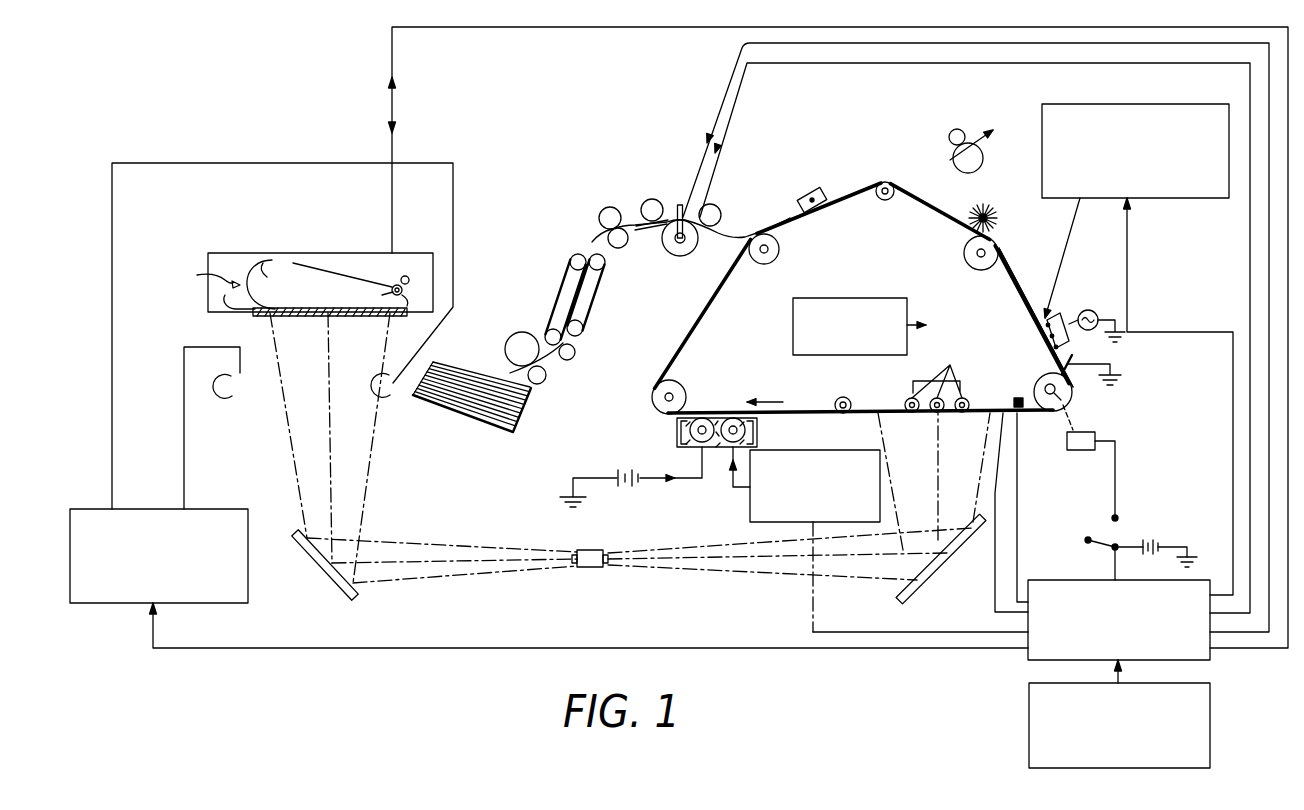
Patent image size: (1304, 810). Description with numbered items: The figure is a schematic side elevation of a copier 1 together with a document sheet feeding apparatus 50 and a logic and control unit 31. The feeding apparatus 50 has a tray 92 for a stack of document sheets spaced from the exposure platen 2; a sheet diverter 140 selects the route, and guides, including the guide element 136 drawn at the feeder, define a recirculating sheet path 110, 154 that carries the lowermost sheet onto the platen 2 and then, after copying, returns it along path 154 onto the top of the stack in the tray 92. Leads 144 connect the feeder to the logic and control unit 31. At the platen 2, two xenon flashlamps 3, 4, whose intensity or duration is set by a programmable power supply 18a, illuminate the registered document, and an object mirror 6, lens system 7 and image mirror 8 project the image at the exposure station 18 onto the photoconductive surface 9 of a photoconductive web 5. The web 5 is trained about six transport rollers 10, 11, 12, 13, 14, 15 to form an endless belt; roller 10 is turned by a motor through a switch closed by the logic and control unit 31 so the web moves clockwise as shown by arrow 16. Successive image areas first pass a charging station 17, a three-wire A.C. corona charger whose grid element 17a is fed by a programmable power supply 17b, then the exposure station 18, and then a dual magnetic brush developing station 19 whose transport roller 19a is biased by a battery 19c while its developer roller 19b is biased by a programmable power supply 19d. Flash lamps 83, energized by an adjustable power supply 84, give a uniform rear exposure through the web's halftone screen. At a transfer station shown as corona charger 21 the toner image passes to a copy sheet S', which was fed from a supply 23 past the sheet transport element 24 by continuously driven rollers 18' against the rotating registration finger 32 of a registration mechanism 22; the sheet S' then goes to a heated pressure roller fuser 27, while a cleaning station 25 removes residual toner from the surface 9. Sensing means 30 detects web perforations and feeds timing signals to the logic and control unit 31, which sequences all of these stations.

The copier 1 is at (553, 230).
The exposure platen 2 is at (350, 316).
The xenon flashlamp 3 is at (236, 395).
The xenon flashlamp 4 is at (398, 394).
The photoconductive web 5 is at (822, 225).
The object mirror 6 is at (315, 572).
The lens system 7 is at (590, 550).
The image mirror 8 is at (940, 558).
The photoconductive surface 9 is at (1020, 283).
The transport roller 10 is at (1042, 378).
The transport roller 11 is at (851, 397).
The transport roller 12 is at (695, 380).
The transport roller 13 is at (764, 264).
The transport roller 14 is at (885, 201).
The transport roller 15 is at (972, 265).
The arrow 16 is at (782, 402).
The charging station 17 is at (1050, 318).
The charger grid 17a is at (1040, 340).
The programmable power supply 17b is at (1135, 167).
The exposure station 18 is at (864, 317).
The continuously driven rollers 18' is at (660, 202).
The programmable power supply 18a is at (213, 603).
The dual magnetic brush developing station 19 is at (677, 441).
The transport roller 19a is at (714, 418).
The developer roller 19b is at (757, 437).
The battery 19c is at (618, 466).
The programmable power supply 19d is at (750, 512).
The transfer station corona charger 21 is at (798, 204).
The copy sheet registration mechanism 22 is at (673, 252).
The copy sheet supply 23 is at (473, 380).
The sheet transport rollers 24 is at (587, 335).
The cleaning station 25 is at (997, 215).
The heated pressure roller fuser 27 is at (970, 135).
The perforation sensing means 30 is at (1017, 400).
The logic and control unit 31 is at (1095, 581).
The registration finger 32 is at (680, 205).
The document sheet feeding apparatus 50 is at (243, 243).
The flash lamps 83 is at (939, 382).
The adjustable power supply 84 is at (847, 298).
The tray 92 is at (386, 283).
The sheet path 110 is at (371, 298).
The guide 136 is at (223, 310).
The sheet diverter 140 is at (202, 276).
The leads 144 is at (555, 32).
The sheet path 154 is at (319, 284).
The copy sheet S' is at (650, 290).